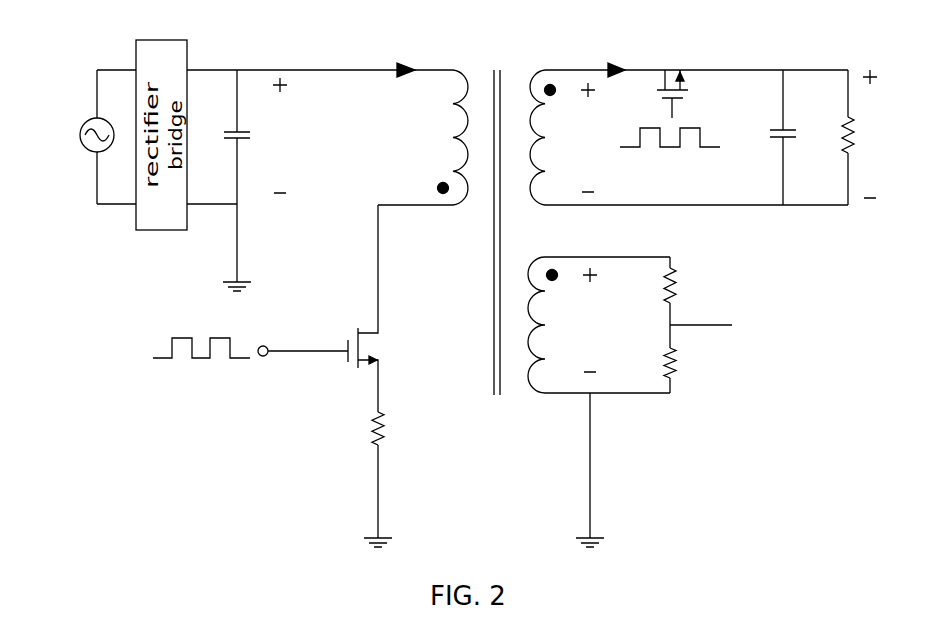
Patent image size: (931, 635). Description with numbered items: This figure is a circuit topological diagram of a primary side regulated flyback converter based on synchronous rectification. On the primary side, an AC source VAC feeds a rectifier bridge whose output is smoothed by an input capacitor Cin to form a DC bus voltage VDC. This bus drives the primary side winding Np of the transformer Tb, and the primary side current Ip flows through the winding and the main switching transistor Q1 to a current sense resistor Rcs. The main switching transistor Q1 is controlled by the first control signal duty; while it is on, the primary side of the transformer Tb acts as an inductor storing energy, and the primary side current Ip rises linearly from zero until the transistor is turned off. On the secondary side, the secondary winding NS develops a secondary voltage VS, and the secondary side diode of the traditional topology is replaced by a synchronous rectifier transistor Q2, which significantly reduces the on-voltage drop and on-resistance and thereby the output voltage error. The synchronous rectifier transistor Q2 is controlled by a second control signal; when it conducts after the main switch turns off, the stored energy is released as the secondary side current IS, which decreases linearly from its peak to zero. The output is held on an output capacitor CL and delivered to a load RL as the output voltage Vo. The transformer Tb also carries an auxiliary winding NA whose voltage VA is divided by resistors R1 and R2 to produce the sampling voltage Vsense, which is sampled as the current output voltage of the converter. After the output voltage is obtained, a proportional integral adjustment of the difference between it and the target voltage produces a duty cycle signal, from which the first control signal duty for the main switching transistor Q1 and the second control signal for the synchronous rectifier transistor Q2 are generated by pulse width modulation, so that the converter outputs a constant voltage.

The AC input voltage source VAC is at (80, 135).
The input capacitor Cin is at (223, 180).
The DC bus voltage VDC is at (277, 135).
The primary side current Ip is at (406, 54).
The primary side winding Np is at (423, 118).
The transformer Tb is at (504, 215).
The secondary winding NS is at (689, 116).
The secondary voltage VS is at (587, 137).
The secondary side current IS is at (615, 52).
The synchronous rectifier transistor Q2 is at (678, 73).
The output capacitor CL is at (770, 137).
The load resistor RL is at (835, 137).
The output voltage Vo is at (873, 134).
The main switching transistor Q1 is at (385, 308).
The first control signal duty is at (250, 365).
The current sense resistor Rcs is at (398, 479).
The auxiliary winding NA is at (599, 386).
The auxiliary voltage VA is at (593, 320).
The first divider resistor R1 is at (658, 291).
The second divider resistor R2 is at (658, 359).
The sampling voltage Vsense is at (711, 310).